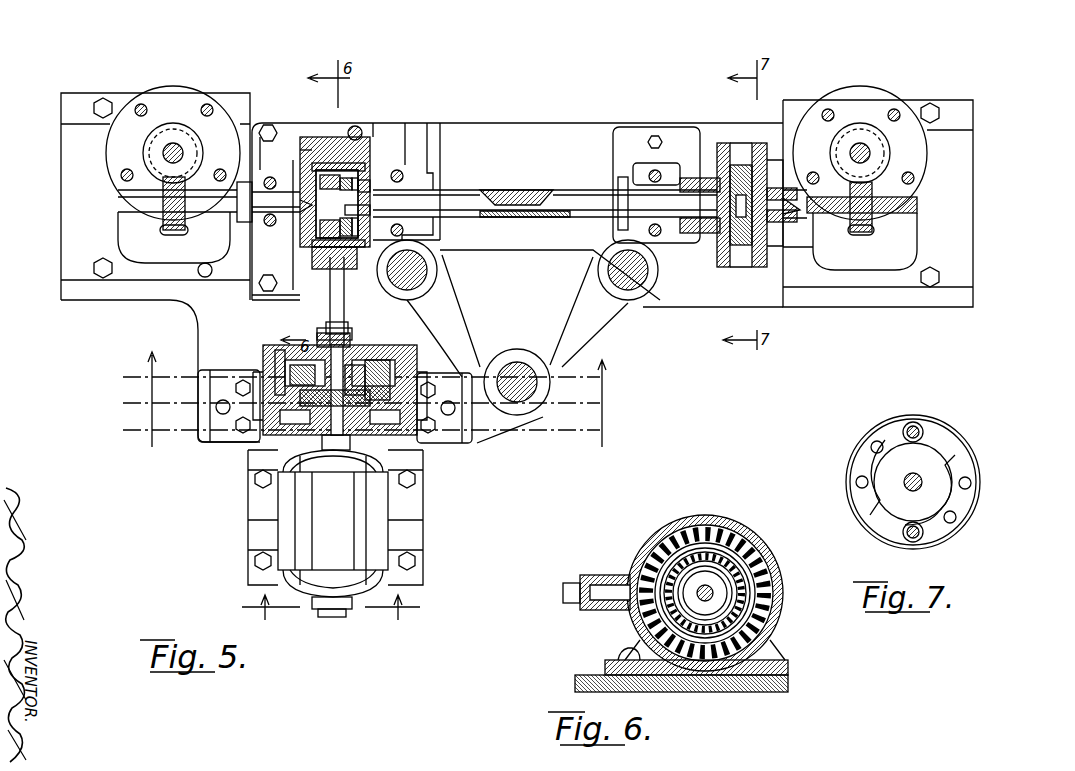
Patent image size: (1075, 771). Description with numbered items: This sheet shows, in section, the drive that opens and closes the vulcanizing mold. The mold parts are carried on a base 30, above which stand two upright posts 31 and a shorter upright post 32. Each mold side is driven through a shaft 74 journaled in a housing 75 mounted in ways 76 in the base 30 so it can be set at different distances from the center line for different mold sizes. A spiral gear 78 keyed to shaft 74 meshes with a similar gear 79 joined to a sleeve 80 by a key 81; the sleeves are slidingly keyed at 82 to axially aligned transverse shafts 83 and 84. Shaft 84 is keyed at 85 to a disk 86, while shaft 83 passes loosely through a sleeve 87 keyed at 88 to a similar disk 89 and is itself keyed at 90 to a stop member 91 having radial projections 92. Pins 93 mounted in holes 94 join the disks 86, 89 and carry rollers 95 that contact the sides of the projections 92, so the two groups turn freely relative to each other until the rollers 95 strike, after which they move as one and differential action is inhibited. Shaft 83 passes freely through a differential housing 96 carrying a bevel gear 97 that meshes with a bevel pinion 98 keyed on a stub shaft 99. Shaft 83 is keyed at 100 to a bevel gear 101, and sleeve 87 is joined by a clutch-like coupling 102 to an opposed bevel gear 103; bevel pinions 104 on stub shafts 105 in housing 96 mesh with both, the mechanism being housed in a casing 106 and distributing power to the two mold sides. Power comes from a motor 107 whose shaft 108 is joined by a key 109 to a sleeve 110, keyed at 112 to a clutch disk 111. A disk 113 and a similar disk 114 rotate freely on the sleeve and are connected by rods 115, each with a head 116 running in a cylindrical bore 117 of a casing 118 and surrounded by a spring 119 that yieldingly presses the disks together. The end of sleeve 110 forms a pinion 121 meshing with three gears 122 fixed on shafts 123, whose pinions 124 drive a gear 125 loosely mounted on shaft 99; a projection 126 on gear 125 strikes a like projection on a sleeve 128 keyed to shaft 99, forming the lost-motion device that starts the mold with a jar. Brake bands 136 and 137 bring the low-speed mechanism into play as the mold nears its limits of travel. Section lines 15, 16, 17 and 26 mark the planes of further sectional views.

In FIG. 5, the section line 15 is at (364, 399).
In FIG. 5, the section line 16 is at (364, 404).
In FIG. 5, the section line 17 is at (365, 431).
In FIG. 5, the section line 26 is at (327, 607).
In FIG. 5, the base 30 is at (480, 135).
In FIG. 6, the base 30 is at (790, 686).
In FIG. 5, the upright posts 31 is at (410, 270).
In FIG. 5, the shorter upright post 32 is at (517, 382).
In FIG. 5, the shaft 74 is at (174, 150).
In FIG. 5, the housing 75 is at (140, 240).
In FIG. 5, the ways 76 is at (72, 105).
In FIG. 5, the spiral gear 78 is at (168, 140).
In FIG. 5, the spiral gear 79 is at (173, 232).
In FIG. 5, the sleeve 80 is at (135, 197).
In FIG. 5, the key 81 is at (865, 235).
In FIG. 5, the sliding key 82 is at (848, 232).
In FIG. 5, the shaft 83 is at (575, 213).
In FIG. 6, the shaft 83 is at (712, 592).
In FIG. 7, the shaft 83 is at (922, 480).
In FIG. 5, the short shaft 84 is at (918, 205).
In FIG. 5, the key 85 is at (775, 250).
In FIG. 5, the disk 86 is at (825, 110).
In FIG. 5, the sleeve 87 is at (505, 205).
In FIG. 5, the key 88 is at (690, 243).
In FIG. 5, the disk 89 is at (722, 170).
In FIG. 7, the disk 89 is at (960, 505).
In FIG. 5, the key 90 is at (790, 208).
In FIG. 5, the stop member 91 is at (740, 250).
In FIG. 7, the stop member 91 is at (885, 468).
In FIG. 7, the radial projections 92 is at (942, 435).
In FIG. 5, the pins 93 is at (742, 180).
In FIG. 7, the pins 93 is at (918, 422).
In FIG. 7, the holes 94 is at (875, 442).
In FIG. 5, the rollers 95 is at (775, 150).
In FIG. 7, the rollers 95 is at (908, 425).
In FIG. 5, the differential housing 96 is at (292, 135).
In FIG. 6, the differential housing 96 is at (730, 565).
In FIG. 5, the bevel gear 97 is at (305, 165).
In FIG. 6, the bevel gear 97 is at (712, 530).
In FIG. 5, the bevel pinion 98 is at (397, 330).
In FIG. 5, the stub shaft 99 is at (300, 300).
In FIG. 6, the stub shaft 99 is at (605, 590).
In FIG. 5, the key 100 is at (298, 232).
In FIG. 5, the bevel gear 101 is at (330, 175).
In FIG. 6, the bevel gear 101 is at (665, 625).
In FIG. 5, the clutch-like coupling 102 is at (400, 185).
In FIG. 5, the bevel gear 103 is at (372, 180).
In FIG. 5, the bevel pinions 104 is at (352, 160).
In FIG. 6, the bevel pinions 104 is at (660, 560).
In FIG. 5, the stub shafts 105 is at (345, 175).
In FIG. 6, the stub shafts 105 is at (690, 560).
In FIG. 5, the casing 106 is at (306, 150).
In FIG. 6, the casing 106 is at (765, 548).
In FIG. 5, the motor 107 is at (378, 522).
In FIG. 5, the motor shaft 108 is at (400, 437).
In FIG. 5, the key 109 is at (330, 440).
In FIG. 5, the sleeve 110 is at (430, 373).
In FIG. 5, the clutch disk 111 is at (300, 437).
In FIG. 5, the key 112 is at (395, 437).
In FIG. 5, the disk 113 is at (235, 370).
In FIG. 5, the disk 114 is at (270, 437).
In FIG. 5, the rods 115 is at (410, 425).
In FIG. 5, the head 116 is at (410, 345).
In FIG. 5, the cylindrical bore 117 is at (425, 355).
In FIG. 5, the casing 118 is at (378, 360).
In FIG. 5, the spring 119 is at (420, 365).
In FIG. 5, the pinion 121 is at (320, 355).
In FIG. 5, the gears 122 is at (300, 392).
In FIG. 5, the shafts 123 is at (282, 350).
In FIG. 5, the pinions 124 is at (295, 368).
In FIG. 5, the gear 125 is at (360, 330).
In FIG. 5, the projection 126 is at (358, 365).
In FIG. 5, the sleeve 128 is at (328, 342).
In FIG. 5, the brake band 136 is at (258, 430).
In FIG. 5, the brake band 137 is at (495, 440).